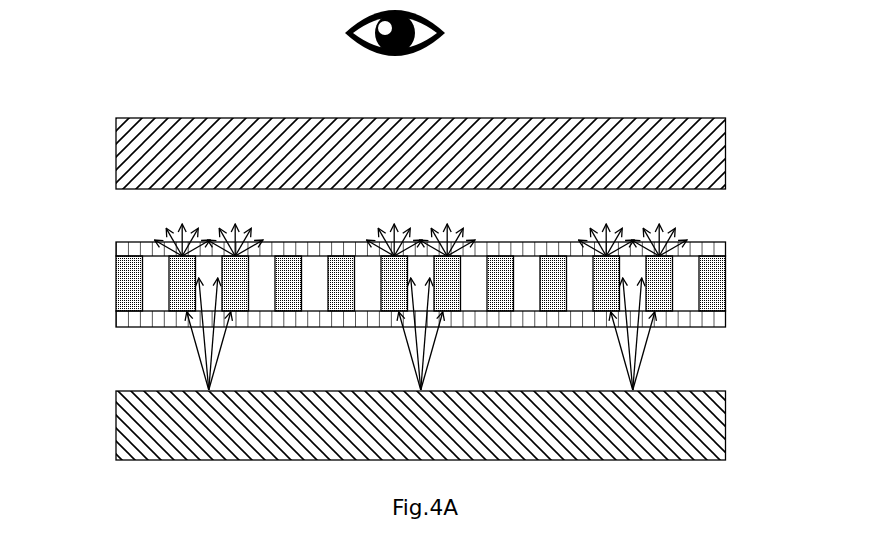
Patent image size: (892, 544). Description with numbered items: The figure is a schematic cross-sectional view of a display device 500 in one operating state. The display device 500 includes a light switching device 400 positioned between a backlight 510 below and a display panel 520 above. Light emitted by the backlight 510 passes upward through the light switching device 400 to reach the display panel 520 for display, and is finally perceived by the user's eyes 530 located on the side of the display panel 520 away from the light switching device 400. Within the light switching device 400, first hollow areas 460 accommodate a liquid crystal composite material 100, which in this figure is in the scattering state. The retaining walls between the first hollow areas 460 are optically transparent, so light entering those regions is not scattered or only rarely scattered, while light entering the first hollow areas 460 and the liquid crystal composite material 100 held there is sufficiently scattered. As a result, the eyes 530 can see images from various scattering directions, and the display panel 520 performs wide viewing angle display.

The display device 500 is at (68, 82).
The user's eyes 530 is at (427, 33).
The display panel 520 is at (705, 152).
The backlight 510 is at (705, 425).
The light switching device 400 is at (426, 307).
The liquid crystal composite material 100 is at (117, 272).
The first hollow areas 460 is at (142, 296).